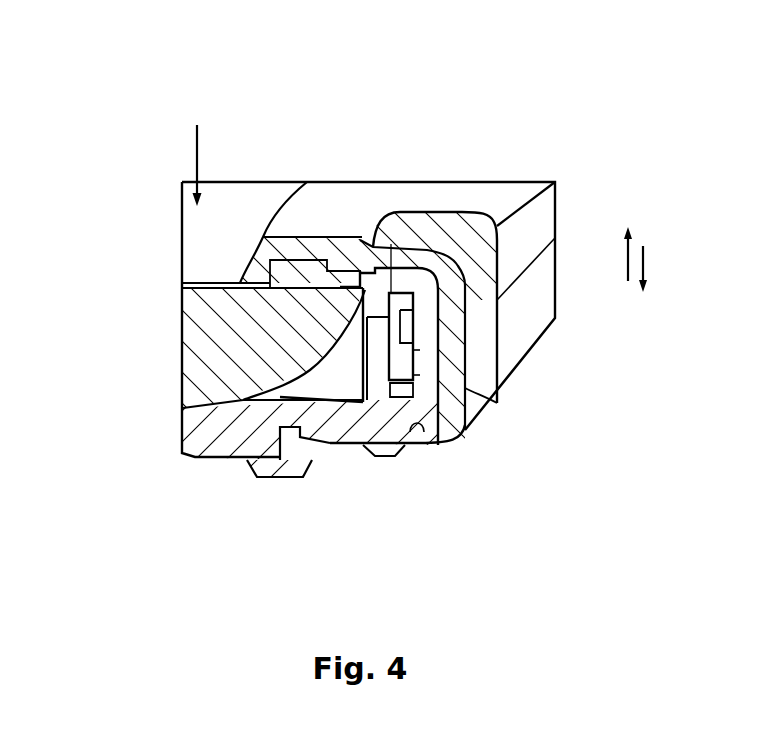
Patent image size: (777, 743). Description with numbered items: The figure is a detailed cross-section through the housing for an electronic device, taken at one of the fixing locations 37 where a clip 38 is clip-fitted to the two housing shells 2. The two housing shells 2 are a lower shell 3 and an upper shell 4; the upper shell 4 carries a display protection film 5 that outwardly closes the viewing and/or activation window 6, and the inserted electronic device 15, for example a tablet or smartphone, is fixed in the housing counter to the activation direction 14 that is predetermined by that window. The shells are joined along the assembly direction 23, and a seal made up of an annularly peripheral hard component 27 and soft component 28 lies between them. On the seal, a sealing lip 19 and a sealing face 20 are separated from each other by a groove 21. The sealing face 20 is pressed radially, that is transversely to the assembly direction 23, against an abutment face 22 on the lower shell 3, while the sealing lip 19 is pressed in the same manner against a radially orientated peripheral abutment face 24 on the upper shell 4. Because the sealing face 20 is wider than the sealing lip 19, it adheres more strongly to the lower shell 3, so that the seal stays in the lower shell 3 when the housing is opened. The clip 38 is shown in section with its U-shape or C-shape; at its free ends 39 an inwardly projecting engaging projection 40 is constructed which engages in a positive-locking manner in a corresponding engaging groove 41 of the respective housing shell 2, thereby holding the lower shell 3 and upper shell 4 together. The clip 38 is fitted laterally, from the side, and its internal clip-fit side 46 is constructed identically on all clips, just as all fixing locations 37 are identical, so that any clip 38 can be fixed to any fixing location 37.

The housing shell 2 is at (306, 154).
The lower shell 3 is at (525, 318).
The upper shell 4 is at (540, 207).
The display protection film 5 is at (195, 228).
The viewing and/or activation window 6 is at (263, 187).
The activation direction 14 is at (195, 145).
The electronic device 15 is at (197, 303).
The sealing lip 19 is at (411, 317).
The sealing face 20 is at (467, 378).
The groove 21 is at (431, 357).
The abutment face 22 is at (376, 392).
The assembly direction 23 is at (656, 259).
The abutment face 24 is at (370, 273).
The hard component 27 is at (263, 428).
The soft component 28 is at (431, 369).
The fixing location 37 is at (480, 203).
The clip 38 is at (415, 425).
The free end 39 is at (372, 242).
The engaging projection 40 is at (368, 237).
The engaging groove 41 is at (372, 364).
The internal clip-fit side 46 is at (407, 412).